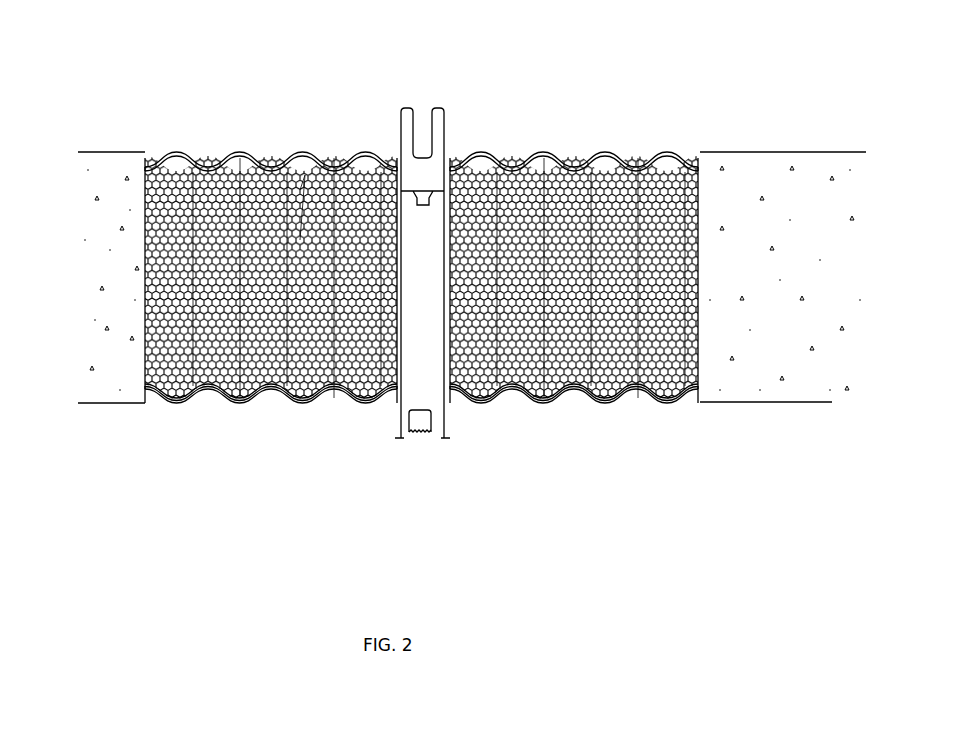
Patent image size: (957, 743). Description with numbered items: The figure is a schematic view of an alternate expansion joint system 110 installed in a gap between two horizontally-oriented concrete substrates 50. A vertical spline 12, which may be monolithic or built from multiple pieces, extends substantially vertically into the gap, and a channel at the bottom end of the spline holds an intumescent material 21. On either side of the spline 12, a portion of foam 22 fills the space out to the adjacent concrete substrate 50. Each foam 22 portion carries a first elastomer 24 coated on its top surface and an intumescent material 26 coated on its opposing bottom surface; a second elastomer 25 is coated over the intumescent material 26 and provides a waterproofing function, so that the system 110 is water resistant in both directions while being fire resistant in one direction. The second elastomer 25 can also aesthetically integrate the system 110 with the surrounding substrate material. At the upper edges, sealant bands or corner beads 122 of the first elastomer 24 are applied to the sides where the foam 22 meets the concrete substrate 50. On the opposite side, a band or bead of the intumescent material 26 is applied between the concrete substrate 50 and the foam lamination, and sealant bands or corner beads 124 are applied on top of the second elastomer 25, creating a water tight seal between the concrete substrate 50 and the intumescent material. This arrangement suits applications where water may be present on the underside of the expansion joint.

The expansion joint system 110 is at (204, 41).
The spline 12 is at (435, 444).
The intumescent material 21 is at (419, 434).
The foam 22 is at (337, 166).
The first elastomer 24 is at (240, 153).
The second elastomer 25 is at (353, 404).
The intumescent material 26 is at (216, 404).
The concrete substrate 50 is at (800, 153).
The sealant bands and/or corner beads 122 is at (150, 164).
The sealant bands and/or corner beads 124 is at (152, 405).